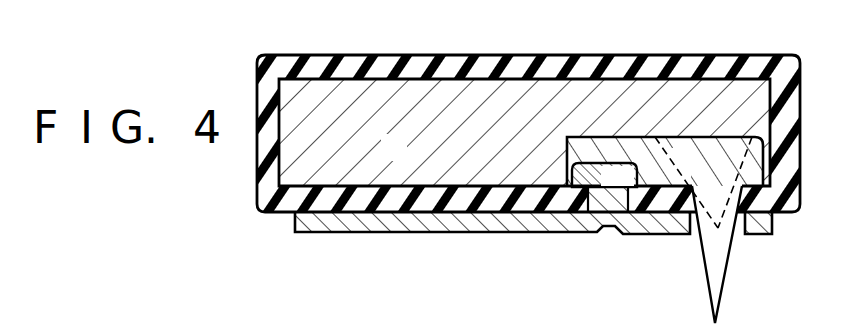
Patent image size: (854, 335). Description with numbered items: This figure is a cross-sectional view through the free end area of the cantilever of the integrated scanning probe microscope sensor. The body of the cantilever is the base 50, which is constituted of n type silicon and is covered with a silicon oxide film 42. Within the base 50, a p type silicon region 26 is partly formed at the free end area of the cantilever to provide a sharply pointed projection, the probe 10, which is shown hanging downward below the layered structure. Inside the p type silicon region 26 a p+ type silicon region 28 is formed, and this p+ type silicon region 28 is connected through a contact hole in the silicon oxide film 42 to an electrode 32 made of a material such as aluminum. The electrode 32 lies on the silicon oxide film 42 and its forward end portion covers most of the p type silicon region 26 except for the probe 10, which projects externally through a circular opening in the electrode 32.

The silicon oxide film 42 is at (398, 64).
The base 50 is at (528, 78).
The p type silicon region 26 is at (717, 150).
The p+ type silicon region 28 is at (573, 171).
The electrode 32 is at (435, 227).
The probe 10 is at (726, 258).